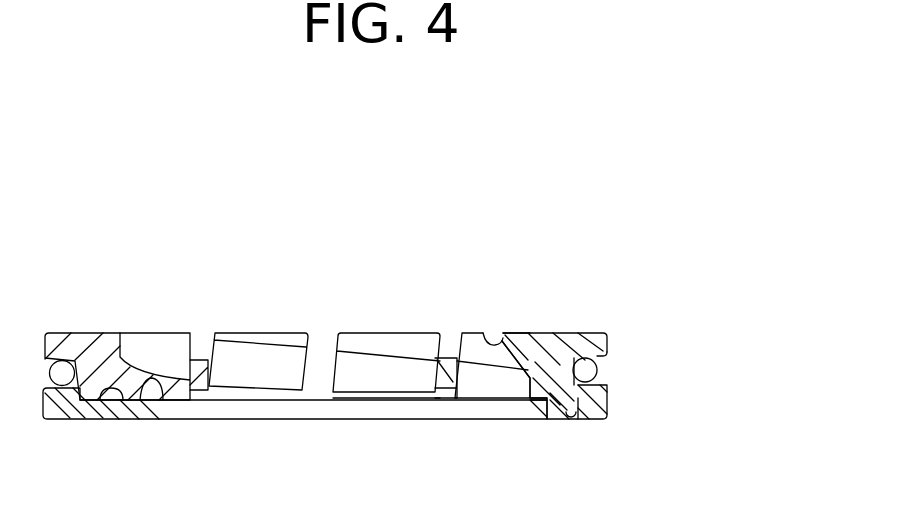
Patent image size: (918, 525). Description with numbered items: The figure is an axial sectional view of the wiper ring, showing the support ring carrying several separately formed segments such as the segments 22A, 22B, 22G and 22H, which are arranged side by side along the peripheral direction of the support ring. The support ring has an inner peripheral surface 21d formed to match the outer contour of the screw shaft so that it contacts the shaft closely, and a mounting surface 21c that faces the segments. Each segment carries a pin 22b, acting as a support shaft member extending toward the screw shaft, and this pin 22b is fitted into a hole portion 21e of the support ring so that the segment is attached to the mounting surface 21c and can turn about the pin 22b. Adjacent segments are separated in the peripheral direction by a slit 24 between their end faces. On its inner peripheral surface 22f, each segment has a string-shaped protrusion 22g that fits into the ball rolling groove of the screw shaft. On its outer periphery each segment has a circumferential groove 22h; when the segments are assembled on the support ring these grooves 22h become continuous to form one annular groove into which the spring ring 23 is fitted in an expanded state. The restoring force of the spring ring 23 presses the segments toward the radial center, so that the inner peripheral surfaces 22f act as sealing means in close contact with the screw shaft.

The mounting surface 21c is at (100, 403).
The inner peripheral surface 21d is at (527, 408).
The hole portion 21e is at (567, 415).
The segment 22A is at (383, 333).
The segment 22B is at (553, 332).
The segment 22G is at (157, 332).
The segment 22H is at (267, 332).
The pin 22b is at (565, 408).
The inner peripheral surface 22f is at (358, 341).
The protrusion 22g is at (407, 371).
The groove 22h is at (612, 363).
The spring ring 23 is at (588, 375).
The slit 24 is at (321, 346).